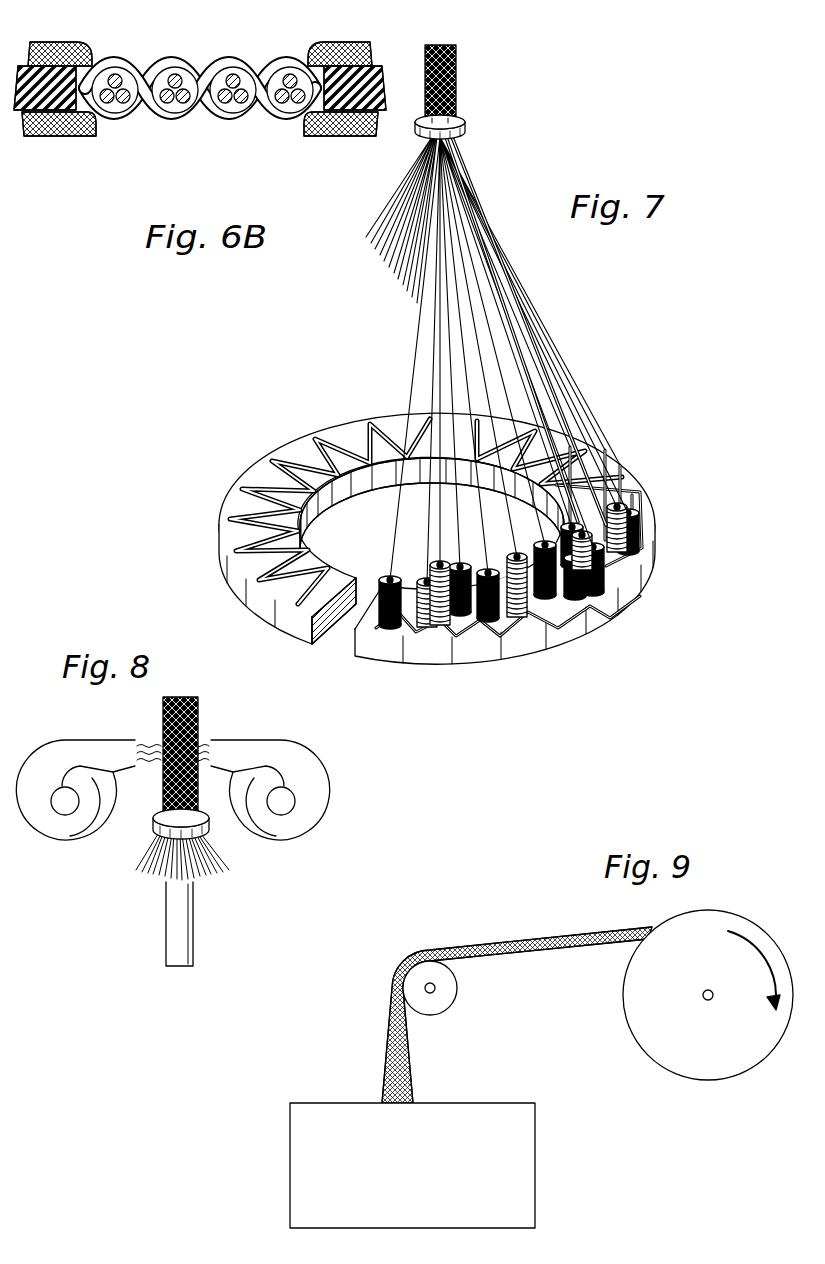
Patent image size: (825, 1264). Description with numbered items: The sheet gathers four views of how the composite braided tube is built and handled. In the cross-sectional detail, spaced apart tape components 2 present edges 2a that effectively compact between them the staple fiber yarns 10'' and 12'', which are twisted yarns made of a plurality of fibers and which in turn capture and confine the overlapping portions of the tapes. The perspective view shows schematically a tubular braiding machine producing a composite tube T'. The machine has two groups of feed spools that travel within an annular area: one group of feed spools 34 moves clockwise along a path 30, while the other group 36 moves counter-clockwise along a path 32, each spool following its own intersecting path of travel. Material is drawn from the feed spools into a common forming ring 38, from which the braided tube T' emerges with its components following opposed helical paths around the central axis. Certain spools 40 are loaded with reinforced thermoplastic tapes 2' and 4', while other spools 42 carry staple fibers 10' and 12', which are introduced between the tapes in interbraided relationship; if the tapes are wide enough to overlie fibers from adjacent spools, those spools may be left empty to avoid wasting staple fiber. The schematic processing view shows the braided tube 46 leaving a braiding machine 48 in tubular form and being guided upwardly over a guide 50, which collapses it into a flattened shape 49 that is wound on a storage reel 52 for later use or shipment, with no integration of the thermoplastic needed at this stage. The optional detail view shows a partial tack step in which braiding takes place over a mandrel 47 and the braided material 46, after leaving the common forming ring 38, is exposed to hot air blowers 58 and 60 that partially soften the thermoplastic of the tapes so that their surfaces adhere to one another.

In FIG. 6B, the tape component 2 is at (215, 109).
In FIG. 6B, the tape edge 2a is at (94, 52).
In FIG. 6B, the staple fiber yarn 12'' is at (200, 98).
In FIG. 6B, the staple fiber yarn 10'' is at (202, 129).
In FIG. 7, the composite tube T' is at (475, 84).
In FIG. 7, the common forming ring 38 is at (466, 128).
In FIG. 8, the common forming ring 38 is at (153, 832).
In FIG. 7, the staple fibers 12' is at (489, 359).
In FIG. 7, the staple fibers 10' is at (534, 342).
In FIG. 7, the reinforced thermoplastic tape 2' is at (536, 329).
In FIG. 7, the reinforced thermoplastic tape 4' is at (551, 331).
In FIG. 7, the spool travel path 32 is at (300, 546).
In FIG. 7, the spool travel path 30 is at (240, 578).
In FIG. 7, the tape spools 40 is at (634, 528).
In FIG. 7, the staple fiber spools 42 is at (604, 567).
In FIG. 7, the counter-clockwise feed spool group 36 is at (392, 632).
In FIG. 7, the clockwise feed spool group 34 is at (426, 634).
In FIG. 8, the hot air blower 58 is at (56, 752).
In FIG. 8, the braided tube 46 is at (200, 720).
In FIG. 9, the braided tube 46 is at (410, 1066).
In FIG. 8, the hot air blower 60 is at (320, 790).
In FIG. 8, the mandrel 47 is at (196, 928).
In FIG. 9, the flattened braid tube 49 is at (544, 940).
In FIG. 9, the guide 50 is at (459, 990).
In FIG. 9, the storage reel 52 is at (754, 930).
In FIG. 9, the braiding machine 48 is at (537, 1131).